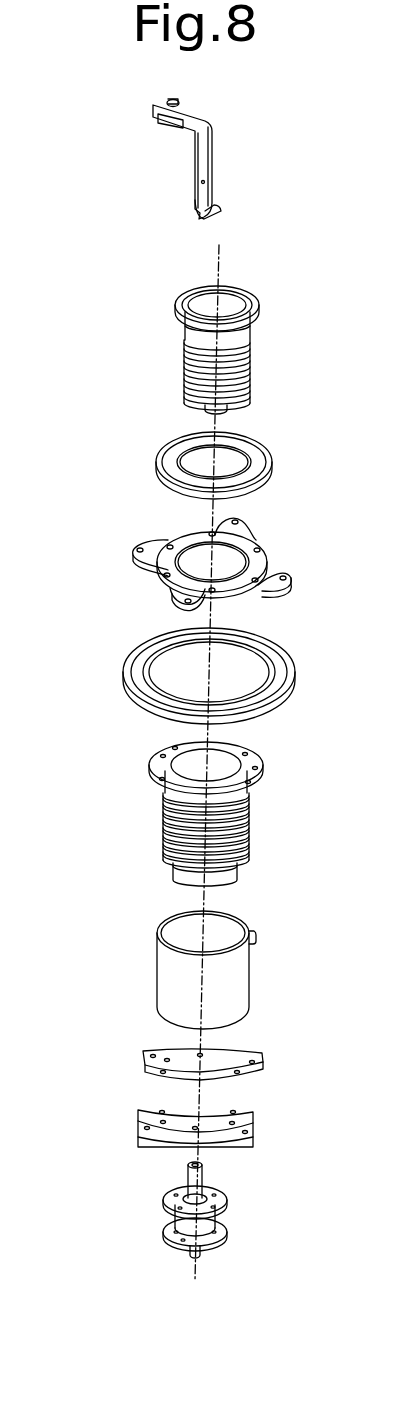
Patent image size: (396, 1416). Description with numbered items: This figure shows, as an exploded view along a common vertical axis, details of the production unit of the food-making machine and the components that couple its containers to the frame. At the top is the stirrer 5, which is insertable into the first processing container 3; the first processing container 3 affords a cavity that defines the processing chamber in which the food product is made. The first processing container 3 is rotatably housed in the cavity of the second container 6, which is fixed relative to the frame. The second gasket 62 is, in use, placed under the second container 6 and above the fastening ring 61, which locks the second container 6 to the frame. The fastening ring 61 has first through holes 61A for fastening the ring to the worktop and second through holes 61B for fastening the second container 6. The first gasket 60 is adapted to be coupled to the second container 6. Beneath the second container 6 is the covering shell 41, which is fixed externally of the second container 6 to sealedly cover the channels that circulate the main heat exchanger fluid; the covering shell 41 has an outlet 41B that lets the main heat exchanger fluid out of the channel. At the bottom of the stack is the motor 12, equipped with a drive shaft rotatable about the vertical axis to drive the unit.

The stirrer 5 is at (263, 154).
The first processing container 3 is at (272, 352).
The second gasket 62 is at (289, 440).
The fastening ring 61 is at (187, 560).
The first holes 61A is at (137, 545).
The second holes 61B is at (212, 536).
The first gasket 60 is at (116, 711).
The second container 6 is at (143, 822).
The covering shell 41 is at (191, 927).
The outlet 41B is at (259, 930).
The motor 12 is at (150, 1212).